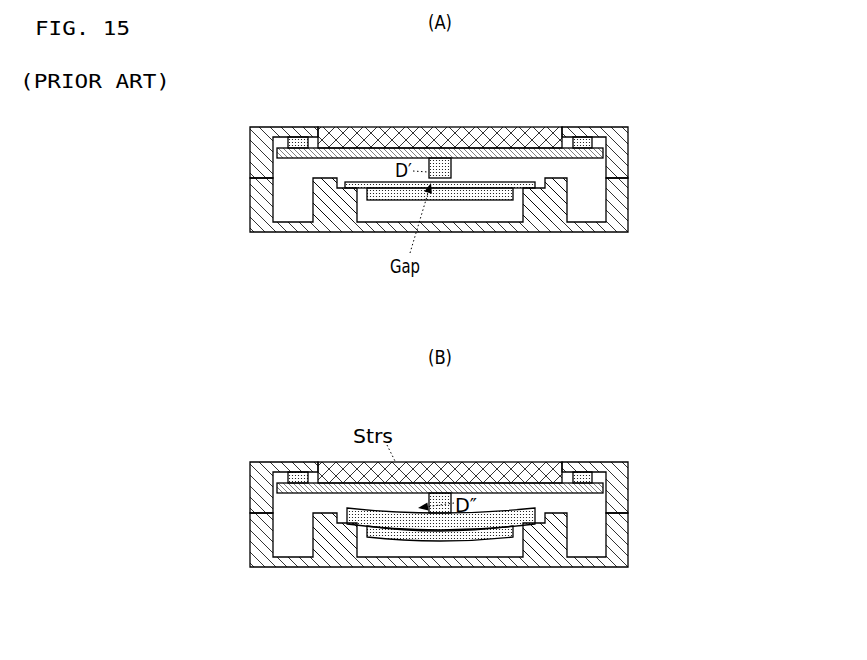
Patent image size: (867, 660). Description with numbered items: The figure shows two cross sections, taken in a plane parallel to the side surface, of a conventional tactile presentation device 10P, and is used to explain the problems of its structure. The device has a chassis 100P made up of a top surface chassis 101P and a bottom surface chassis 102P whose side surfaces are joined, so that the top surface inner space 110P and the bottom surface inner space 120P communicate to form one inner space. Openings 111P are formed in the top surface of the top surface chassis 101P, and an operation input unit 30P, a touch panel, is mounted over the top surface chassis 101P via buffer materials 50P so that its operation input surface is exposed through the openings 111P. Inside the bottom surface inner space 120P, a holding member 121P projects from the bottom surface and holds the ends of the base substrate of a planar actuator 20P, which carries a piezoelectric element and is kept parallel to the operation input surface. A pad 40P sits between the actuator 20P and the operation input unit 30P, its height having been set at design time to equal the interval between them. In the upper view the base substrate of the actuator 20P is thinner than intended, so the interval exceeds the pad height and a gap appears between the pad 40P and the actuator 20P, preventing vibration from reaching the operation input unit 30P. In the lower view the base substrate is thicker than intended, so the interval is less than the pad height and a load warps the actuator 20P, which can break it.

The tactile presentation device 10P is at (585, 66).
The chassis 100P is at (664, 107).
The top surface chassis 101P is at (629, 133).
The openings 111P is at (560, 117).
The bottom surface chassis 102P is at (629, 192).
The top surface inner space 110P is at (618, 158).
The buffer materials 50P is at (296, 137).
The operation input unit 30P is at (409, 138).
The pad 40P is at (443, 162).
The actuator 20P is at (462, 214).
The holding member 121P is at (337, 223).
The bottom surface inner space 120P is at (585, 225).